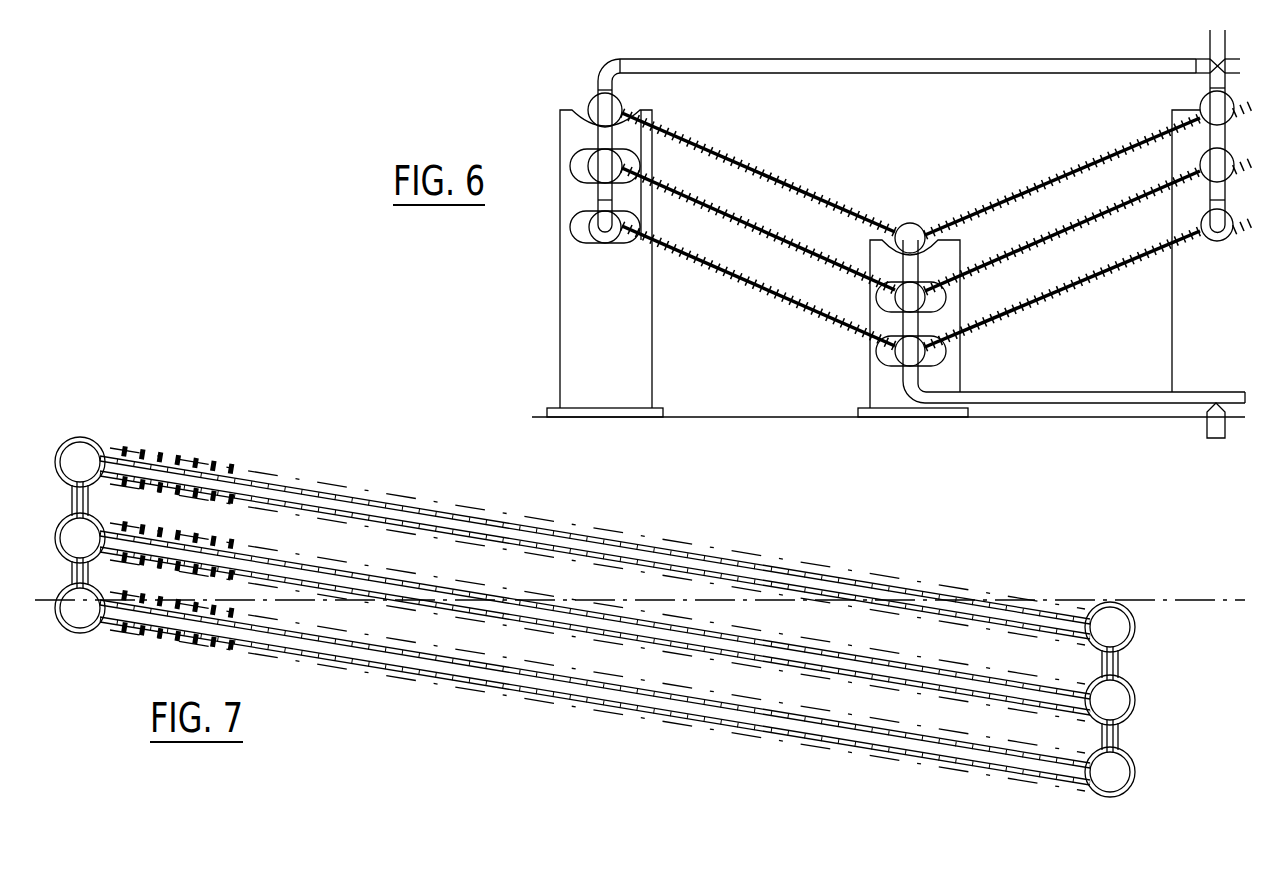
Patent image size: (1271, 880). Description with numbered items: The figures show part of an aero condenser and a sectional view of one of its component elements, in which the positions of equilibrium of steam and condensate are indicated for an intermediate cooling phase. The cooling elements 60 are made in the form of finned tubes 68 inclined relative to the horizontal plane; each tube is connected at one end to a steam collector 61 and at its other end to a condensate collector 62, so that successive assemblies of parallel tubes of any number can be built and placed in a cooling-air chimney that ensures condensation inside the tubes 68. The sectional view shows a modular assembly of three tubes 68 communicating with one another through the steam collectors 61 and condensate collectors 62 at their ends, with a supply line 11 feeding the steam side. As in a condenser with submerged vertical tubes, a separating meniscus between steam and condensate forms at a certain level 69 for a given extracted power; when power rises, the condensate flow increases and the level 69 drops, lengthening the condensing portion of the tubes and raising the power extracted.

In FIG. 6, the supply pipe 11 is at (1208, 42).
In FIG. 6, the cooling element 60 is at (560, 292).
In FIG. 6, the steam collector 61 is at (618, 101).
In FIG. 7, the steam collector 61 is at (90, 537).
In FIG. 6, the condensate collector 62 is at (913, 226).
In FIG. 7, the condensate collector 62 is at (1117, 697).
In FIG. 7, the finned tube 68 is at (598, 547).
In FIG. 7, the level 69 is at (1152, 600).